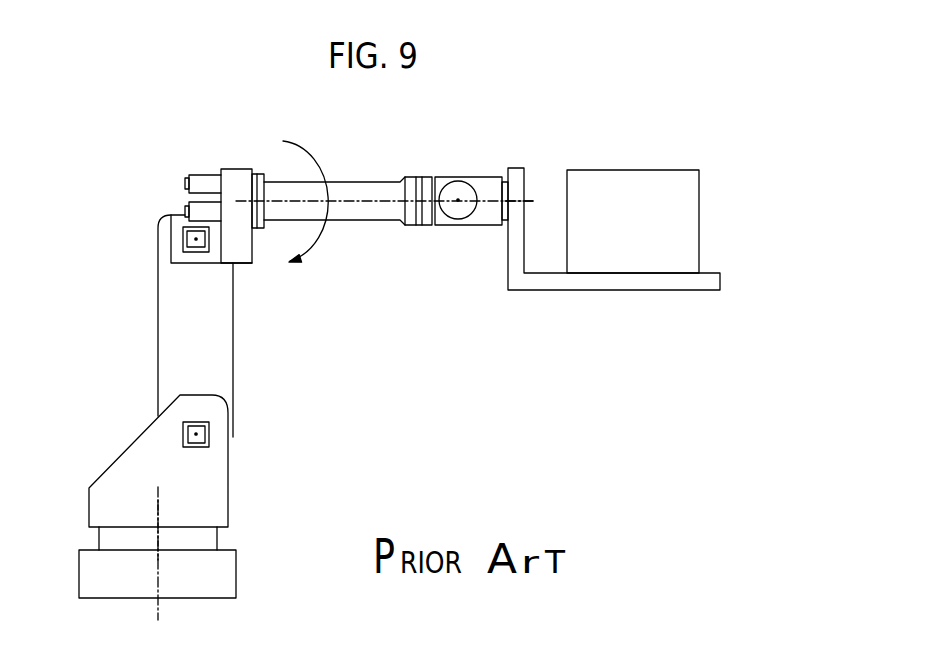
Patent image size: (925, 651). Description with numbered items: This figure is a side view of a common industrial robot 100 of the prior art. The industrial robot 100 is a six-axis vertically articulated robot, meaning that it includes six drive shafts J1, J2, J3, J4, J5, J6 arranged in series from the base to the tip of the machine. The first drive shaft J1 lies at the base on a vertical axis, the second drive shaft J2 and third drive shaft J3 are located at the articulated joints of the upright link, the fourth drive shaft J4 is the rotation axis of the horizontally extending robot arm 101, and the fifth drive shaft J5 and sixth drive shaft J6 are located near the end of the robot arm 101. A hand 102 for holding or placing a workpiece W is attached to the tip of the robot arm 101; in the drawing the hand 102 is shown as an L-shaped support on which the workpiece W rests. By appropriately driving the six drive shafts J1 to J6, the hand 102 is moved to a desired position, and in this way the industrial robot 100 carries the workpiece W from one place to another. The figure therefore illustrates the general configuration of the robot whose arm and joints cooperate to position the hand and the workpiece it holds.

The industrial robot 100 is at (264, 393).
The robot arm 101 is at (383, 181).
The hand 102 is at (553, 282).
The workpiece W is at (663, 182).
The drive shaft J1 is at (157, 513).
The drive shaft J2 is at (197, 434).
The drive shaft J3 is at (196, 239).
The drive shaft J4 is at (297, 201).
The drive shaft J5 is at (458, 200).
The drive shaft J6 is at (530, 200).